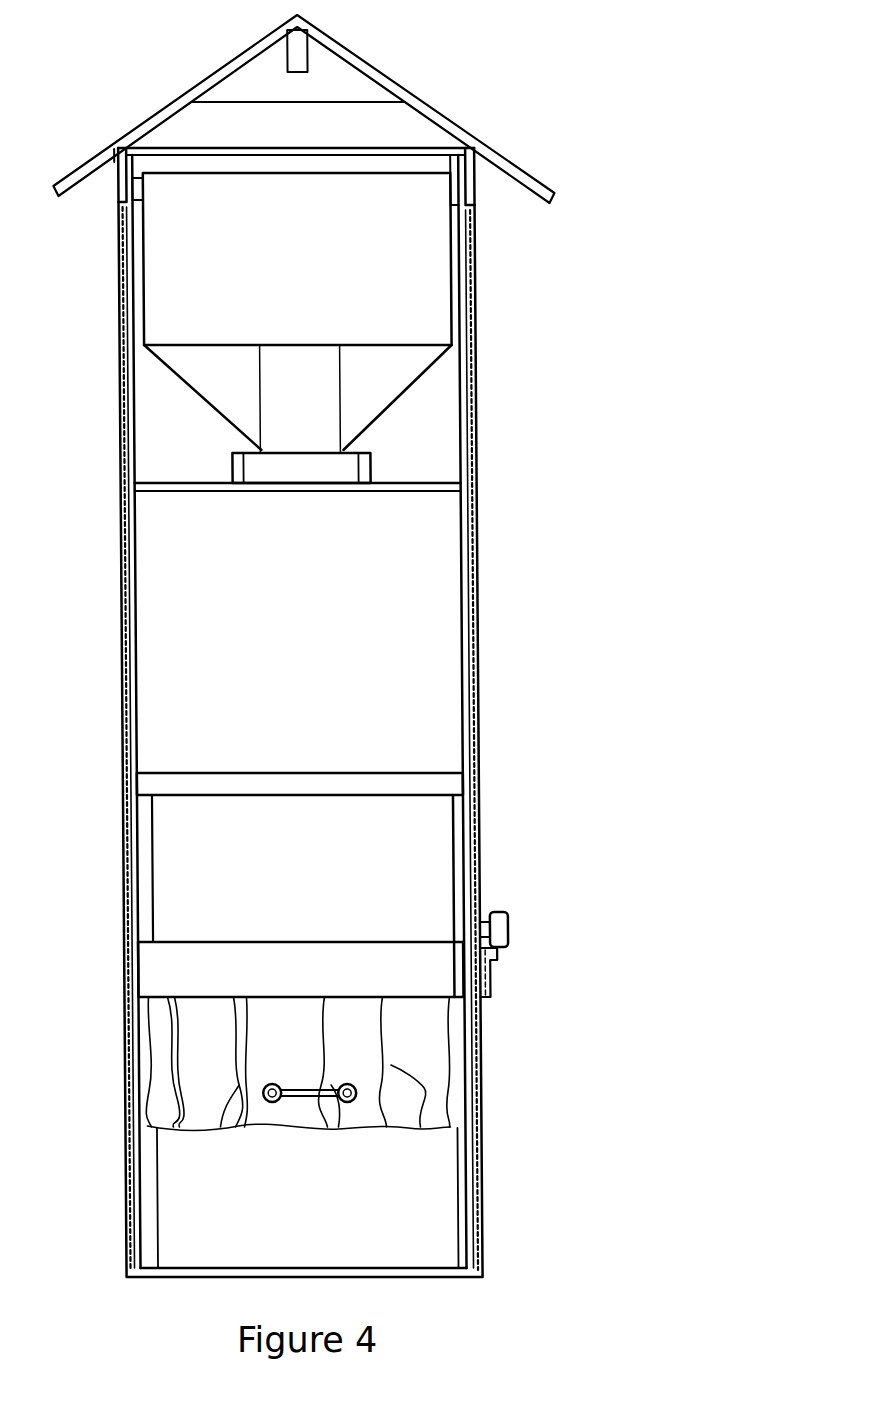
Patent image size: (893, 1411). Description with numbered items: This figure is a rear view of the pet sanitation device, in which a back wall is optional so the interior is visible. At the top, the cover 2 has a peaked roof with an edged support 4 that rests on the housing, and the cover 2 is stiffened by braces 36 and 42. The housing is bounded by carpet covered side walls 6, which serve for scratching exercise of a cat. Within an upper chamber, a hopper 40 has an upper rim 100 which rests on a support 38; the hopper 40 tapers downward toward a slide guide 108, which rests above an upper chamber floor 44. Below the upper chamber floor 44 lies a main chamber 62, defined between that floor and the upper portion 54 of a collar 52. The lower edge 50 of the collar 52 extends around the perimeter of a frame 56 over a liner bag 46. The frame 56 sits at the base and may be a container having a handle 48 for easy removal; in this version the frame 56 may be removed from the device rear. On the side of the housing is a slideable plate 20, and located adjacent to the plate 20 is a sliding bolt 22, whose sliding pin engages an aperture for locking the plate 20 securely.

The cover 2 is at (303, 109).
The edged support 4 is at (491, 183).
The side walls 6 is at (497, 711).
The slideable plate 20 is at (528, 929).
The sliding bolt 22 is at (515, 988).
The brace 36 is at (334, 36).
The support 38 is at (482, 732).
The hopper 40 is at (341, 392).
The brace 42 is at (319, 69).
The upper chamber floor 44 is at (337, 471).
The liner bag 46 is at (345, 1064).
The handle 48 is at (310, 1132).
The lower edge 50 is at (346, 933).
The collar 52 is at (344, 896).
The upper portion 54 is at (351, 768).
The frame 56 is at (343, 1198).
The main chamber 62 is at (107, 711).
The upper rim 100 is at (344, 131).
The slide guide 108 is at (316, 423).